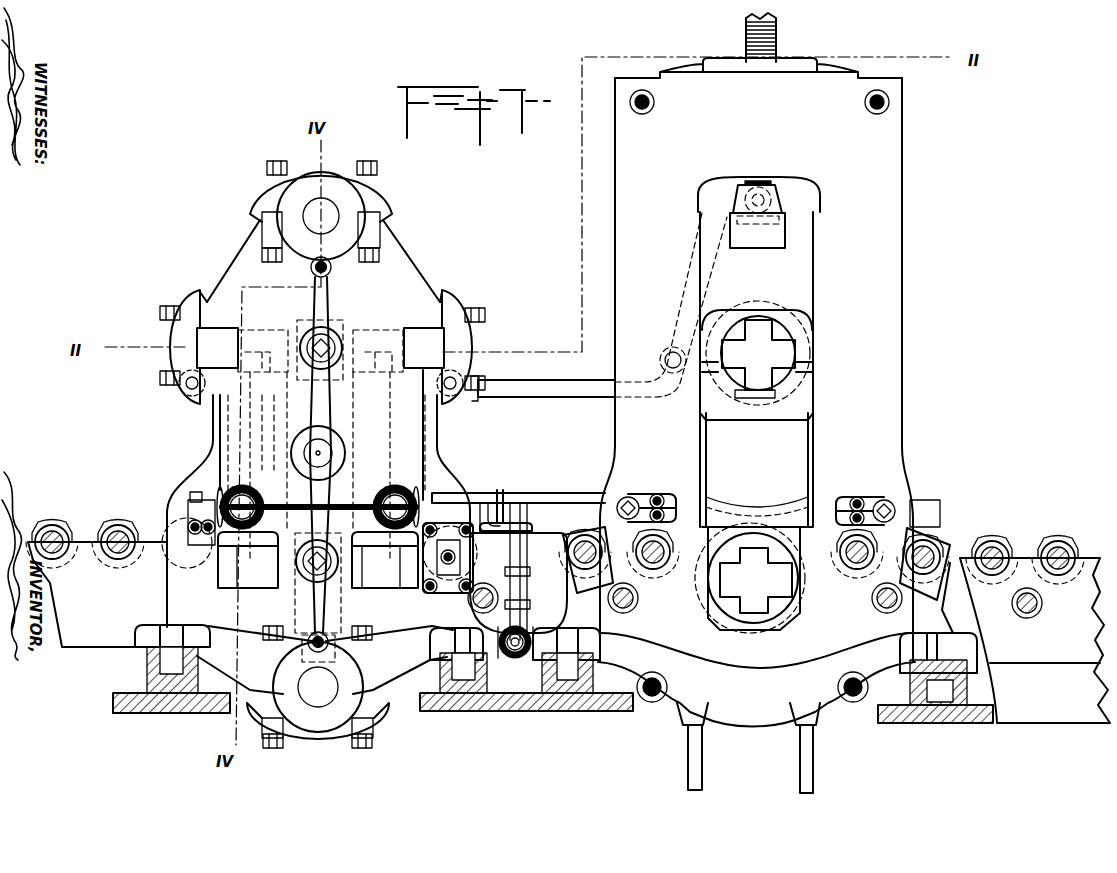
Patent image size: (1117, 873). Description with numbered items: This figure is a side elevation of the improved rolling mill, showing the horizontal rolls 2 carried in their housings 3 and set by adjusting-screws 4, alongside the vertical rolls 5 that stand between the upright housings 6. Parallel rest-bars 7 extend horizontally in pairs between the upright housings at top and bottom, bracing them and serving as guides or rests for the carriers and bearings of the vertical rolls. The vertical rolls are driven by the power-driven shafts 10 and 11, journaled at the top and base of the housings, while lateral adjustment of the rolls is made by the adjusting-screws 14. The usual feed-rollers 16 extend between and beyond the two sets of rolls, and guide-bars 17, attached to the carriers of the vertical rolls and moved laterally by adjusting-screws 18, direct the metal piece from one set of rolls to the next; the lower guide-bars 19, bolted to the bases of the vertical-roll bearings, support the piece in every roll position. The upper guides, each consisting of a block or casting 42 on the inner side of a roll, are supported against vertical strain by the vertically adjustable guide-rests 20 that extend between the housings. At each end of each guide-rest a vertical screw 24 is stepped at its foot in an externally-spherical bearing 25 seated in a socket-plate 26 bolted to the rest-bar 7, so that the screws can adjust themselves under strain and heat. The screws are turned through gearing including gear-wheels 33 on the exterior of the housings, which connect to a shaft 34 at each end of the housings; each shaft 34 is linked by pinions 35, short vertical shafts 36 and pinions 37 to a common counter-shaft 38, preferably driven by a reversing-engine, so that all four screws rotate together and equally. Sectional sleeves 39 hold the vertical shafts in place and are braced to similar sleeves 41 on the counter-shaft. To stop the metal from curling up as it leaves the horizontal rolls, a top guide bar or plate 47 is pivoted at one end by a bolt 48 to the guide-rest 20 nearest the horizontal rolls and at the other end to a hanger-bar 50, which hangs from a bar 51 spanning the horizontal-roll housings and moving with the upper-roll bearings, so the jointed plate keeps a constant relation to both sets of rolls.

The horizontal rolls 2 is at (753, 467).
The housings of the horizontal rolls 3 is at (756, 425).
The adjusting-screws 4 is at (778, 24).
The vertical rolls 5 is at (291, 450).
The upright housings 6 is at (323, 261).
The rest-bars 7 is at (322, 347).
The power-driven shaft 10 is at (321, 211).
The power-driven shaft 11 is at (318, 695).
The adjusting-screws 14 is at (333, 340).
The feed-rollers 16 is at (92, 524).
The guide-bars 17 is at (686, 510).
The adjusting-screws 18 is at (631, 497).
The lower guide-bars 19 is at (213, 529).
The guide-rests 20 is at (320, 351).
The vertical screw 24 is at (326, 466).
The externally-spherical bearing 25 is at (318, 567).
The socket-plate 26 is at (318, 538).
The gear-wheels 33 is at (238, 490).
The shaft 34 is at (319, 519).
The pinions 35 is at (503, 518).
The short vertical shafts 36 is at (518, 583).
The pinions 37 is at (503, 638).
The counter-shaft 38 is at (503, 644).
The sectional sleeves 39 is at (508, 570).
The sleeves 41 is at (522, 656).
The block or casting 42 is at (271, 432).
The top guide bar or plate 47 is at (546, 389).
The bolt 48 is at (486, 399).
The hanger-bar 50 is at (717, 287).
The bar 51 is at (757, 230).